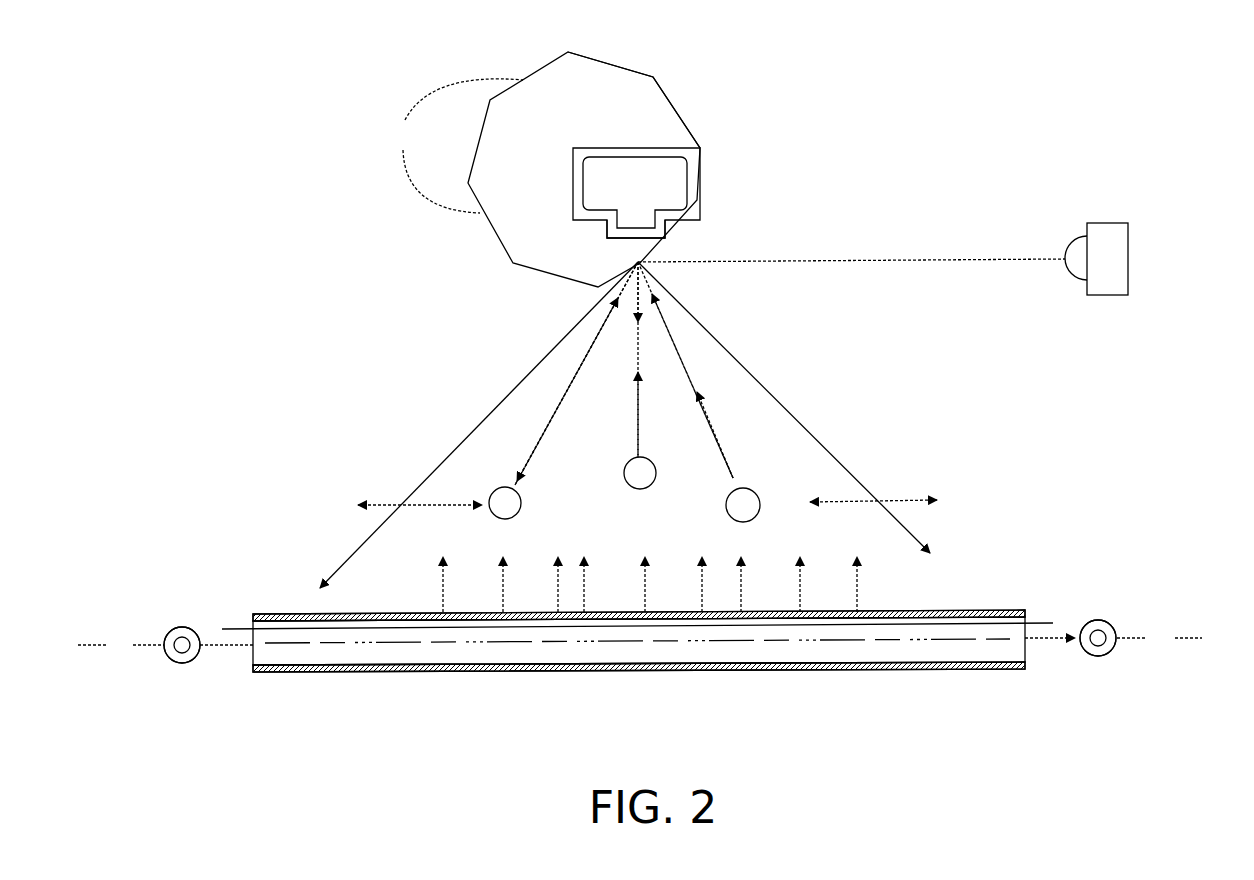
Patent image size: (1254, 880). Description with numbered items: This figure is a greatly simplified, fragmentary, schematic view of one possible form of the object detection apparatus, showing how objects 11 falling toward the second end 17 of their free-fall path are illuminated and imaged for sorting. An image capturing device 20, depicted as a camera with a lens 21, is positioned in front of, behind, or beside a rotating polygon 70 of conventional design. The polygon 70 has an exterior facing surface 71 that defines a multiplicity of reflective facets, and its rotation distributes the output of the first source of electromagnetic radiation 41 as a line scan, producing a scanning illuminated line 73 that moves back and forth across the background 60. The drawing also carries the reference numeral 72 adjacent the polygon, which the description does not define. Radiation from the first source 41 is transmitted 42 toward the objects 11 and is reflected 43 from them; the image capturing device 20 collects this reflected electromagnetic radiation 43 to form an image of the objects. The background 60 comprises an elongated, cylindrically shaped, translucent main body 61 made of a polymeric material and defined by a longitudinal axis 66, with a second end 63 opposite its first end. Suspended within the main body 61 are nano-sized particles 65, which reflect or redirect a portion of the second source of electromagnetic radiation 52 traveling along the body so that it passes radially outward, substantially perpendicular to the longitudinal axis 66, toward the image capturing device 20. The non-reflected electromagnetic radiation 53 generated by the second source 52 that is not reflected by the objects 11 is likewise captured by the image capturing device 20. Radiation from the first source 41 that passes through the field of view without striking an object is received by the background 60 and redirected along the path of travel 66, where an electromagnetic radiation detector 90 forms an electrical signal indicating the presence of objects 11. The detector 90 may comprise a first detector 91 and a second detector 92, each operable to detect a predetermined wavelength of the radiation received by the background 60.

The objects 11 is at (522, 512).
The second end of the free-fall path of travel 17 is at (847, 408).
The image capturing device 20 is at (645, 195).
The lens 21 is at (662, 232).
The first source of electromagnetic radiation 41 is at (1118, 273).
The transmitted electromagnetic radiation 42 is at (915, 261).
The reflected electromagnetic radiation 43 is at (670, 318).
The second source of electromagnetic radiation 52 is at (745, 592).
The non-reflected electromagnetic radiation 53 is at (860, 588).
The background 60 is at (655, 578).
The main body 61 is at (953, 650).
The second end 63 is at (1023, 665).
The nano-sized particles 65 is at (915, 655).
The longitudinal axis 66 is at (100, 640).
The rotating polygon 70 is at (670, 112).
The exterior facing surface 71 is at (613, 62).
The rotation direction 72 is at (477, 140).
The scanning illuminated line 73 is at (750, 372).
The electromagnetic radiation detector 90 is at (188, 613).
The first detector 91 is at (187, 670).
The second detector 92 is at (1113, 622).